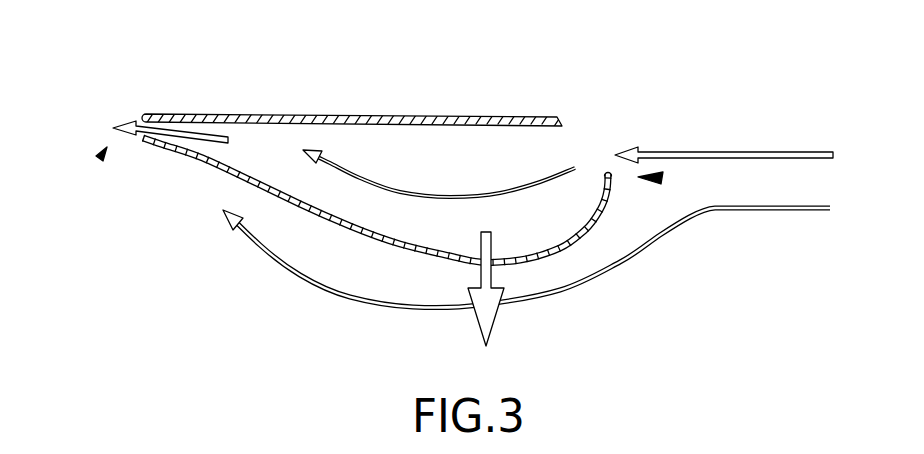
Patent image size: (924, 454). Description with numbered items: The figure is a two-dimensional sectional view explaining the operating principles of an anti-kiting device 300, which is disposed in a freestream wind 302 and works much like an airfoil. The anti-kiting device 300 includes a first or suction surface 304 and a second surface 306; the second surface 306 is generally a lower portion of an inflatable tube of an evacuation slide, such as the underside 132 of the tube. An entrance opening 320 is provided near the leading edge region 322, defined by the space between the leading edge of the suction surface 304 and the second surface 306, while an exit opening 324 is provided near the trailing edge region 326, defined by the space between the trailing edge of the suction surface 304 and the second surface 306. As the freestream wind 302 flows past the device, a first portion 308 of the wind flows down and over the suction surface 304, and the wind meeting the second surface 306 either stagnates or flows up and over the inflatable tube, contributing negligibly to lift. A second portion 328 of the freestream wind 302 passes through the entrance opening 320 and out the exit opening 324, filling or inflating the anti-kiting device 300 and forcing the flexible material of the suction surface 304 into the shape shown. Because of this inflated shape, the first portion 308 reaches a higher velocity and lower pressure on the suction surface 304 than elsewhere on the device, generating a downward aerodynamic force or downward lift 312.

The anti-kiting device 300 is at (113, 97).
The underside of the inflatable tube 132 is at (545, 122).
The second surface 306 is at (515, 118).
The suction surface 304 is at (593, 225).
The entrance opening 320 is at (607, 172).
The first portion of the freestream wind 308 is at (732, 210).
The second portion of the freestream wind 328 is at (387, 195).
The downward lift 312 is at (493, 322).
The exit opening 324 is at (143, 142).
The trailing edge region 326 is at (107, 147).
The freestream wind 302 is at (813, 157).
The leading edge region 322 is at (662, 179).